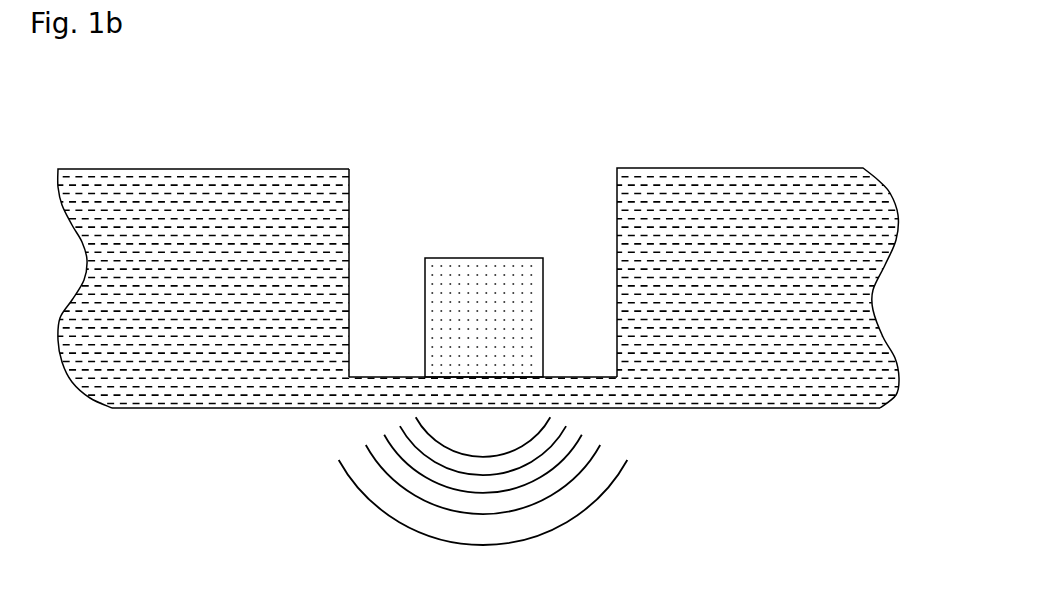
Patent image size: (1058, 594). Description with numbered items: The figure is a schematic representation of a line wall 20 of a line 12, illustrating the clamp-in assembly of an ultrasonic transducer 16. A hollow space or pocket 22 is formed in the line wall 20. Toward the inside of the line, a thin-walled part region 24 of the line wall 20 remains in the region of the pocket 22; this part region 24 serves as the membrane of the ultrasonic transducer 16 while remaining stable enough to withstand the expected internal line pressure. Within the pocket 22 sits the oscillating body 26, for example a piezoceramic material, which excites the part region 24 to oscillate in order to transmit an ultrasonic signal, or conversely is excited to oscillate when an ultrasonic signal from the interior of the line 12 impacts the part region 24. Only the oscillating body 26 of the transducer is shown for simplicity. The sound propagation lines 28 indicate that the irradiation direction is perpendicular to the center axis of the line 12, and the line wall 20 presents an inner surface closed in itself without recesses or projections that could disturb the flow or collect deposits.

The line 12 is at (896, 105).
The ultrasonic transducer 16 is at (367, 145).
The line wall 20 is at (717, 192).
The pocket 22 is at (595, 210).
The thin-walled part region 24 is at (392, 400).
The oscillating body 26 is at (475, 277).
The sound propagation lines 28 is at (568, 503).